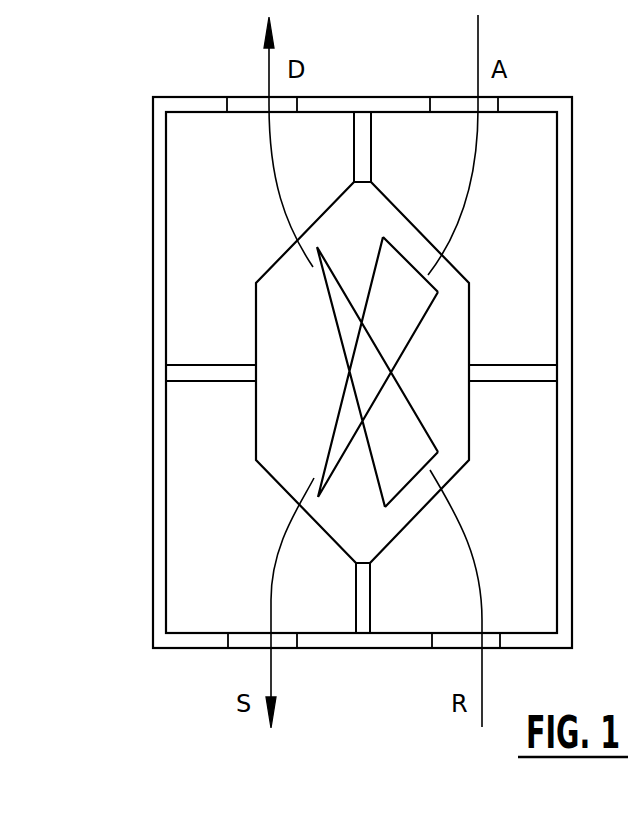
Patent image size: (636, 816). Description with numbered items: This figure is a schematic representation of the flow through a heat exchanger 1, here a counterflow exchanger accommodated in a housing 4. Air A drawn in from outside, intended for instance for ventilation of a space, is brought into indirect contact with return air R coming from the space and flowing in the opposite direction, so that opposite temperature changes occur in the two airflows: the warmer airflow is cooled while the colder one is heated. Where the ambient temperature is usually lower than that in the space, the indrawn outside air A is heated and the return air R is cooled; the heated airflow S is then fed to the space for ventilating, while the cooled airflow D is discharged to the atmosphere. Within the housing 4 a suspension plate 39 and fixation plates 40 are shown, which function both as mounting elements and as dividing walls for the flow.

The heat exchanger 1 is at (250, 520).
The housing 4 is at (163, 517).
The suspension plate 39 is at (364, 141).
The fixation plate 40 is at (503, 372).